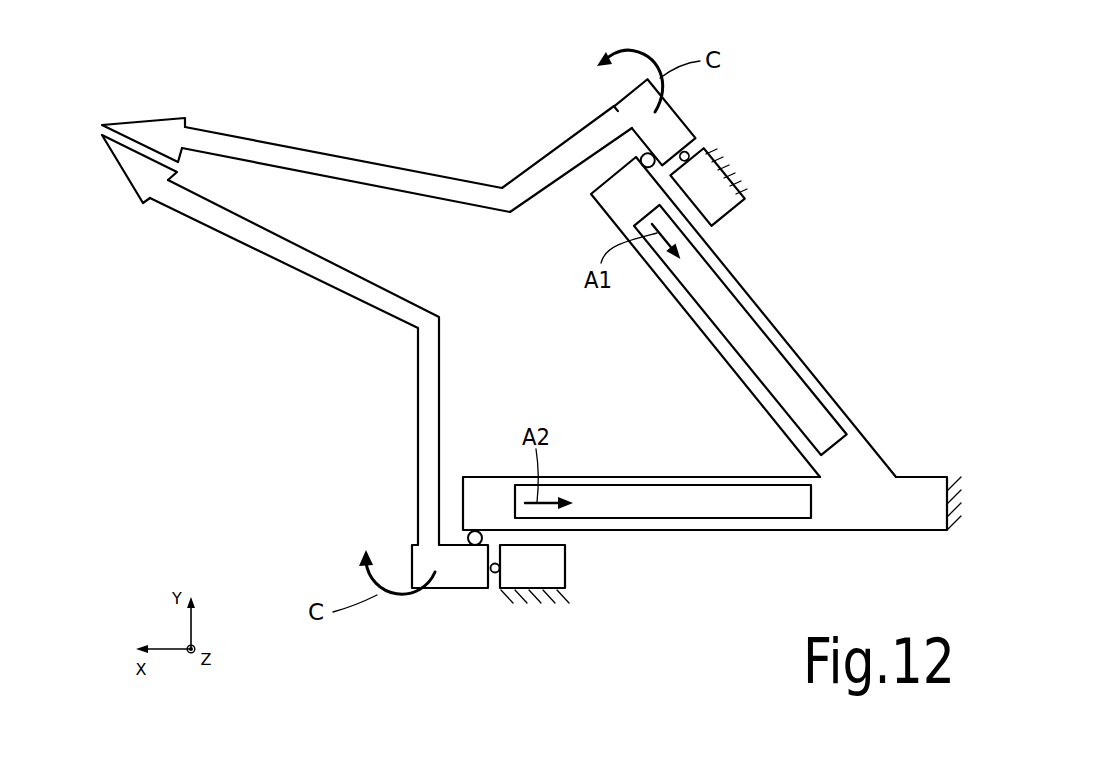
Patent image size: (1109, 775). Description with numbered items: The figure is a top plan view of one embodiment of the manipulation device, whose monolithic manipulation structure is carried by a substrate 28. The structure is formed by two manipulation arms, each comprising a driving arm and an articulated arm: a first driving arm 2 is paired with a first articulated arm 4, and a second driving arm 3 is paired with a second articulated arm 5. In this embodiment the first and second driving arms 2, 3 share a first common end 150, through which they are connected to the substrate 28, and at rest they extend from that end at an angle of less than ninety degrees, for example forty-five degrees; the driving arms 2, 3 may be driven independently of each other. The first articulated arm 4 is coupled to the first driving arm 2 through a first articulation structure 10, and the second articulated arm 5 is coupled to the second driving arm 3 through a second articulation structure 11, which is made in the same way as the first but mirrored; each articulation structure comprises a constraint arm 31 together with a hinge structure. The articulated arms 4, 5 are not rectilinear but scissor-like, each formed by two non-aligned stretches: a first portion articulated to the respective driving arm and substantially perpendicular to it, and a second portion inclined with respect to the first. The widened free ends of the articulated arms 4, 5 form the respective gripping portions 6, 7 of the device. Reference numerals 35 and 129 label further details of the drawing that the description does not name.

The first driving arm 2 is at (824, 396).
The second driving arm 3 is at (750, 531).
The first articulated arm 4 is at (367, 142).
The second articulated arm 5 is at (256, 340).
The gripping portion 6 is at (169, 136).
The gripping portion 7 is at (133, 163).
The first articulation structure 10 is at (724, 125).
The second articulation structure 11 is at (493, 606).
The substrate 28 is at (556, 600).
The constraint arm 31 is at (562, 570).
The arm end block 35 is at (456, 581).
The guide slot 129 is at (632, 498).
The first common end 150 is at (927, 512).